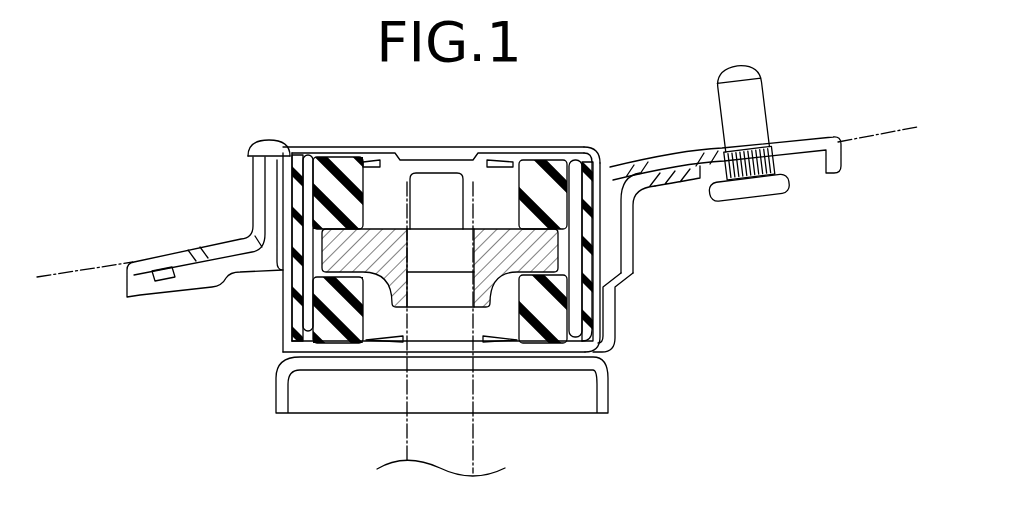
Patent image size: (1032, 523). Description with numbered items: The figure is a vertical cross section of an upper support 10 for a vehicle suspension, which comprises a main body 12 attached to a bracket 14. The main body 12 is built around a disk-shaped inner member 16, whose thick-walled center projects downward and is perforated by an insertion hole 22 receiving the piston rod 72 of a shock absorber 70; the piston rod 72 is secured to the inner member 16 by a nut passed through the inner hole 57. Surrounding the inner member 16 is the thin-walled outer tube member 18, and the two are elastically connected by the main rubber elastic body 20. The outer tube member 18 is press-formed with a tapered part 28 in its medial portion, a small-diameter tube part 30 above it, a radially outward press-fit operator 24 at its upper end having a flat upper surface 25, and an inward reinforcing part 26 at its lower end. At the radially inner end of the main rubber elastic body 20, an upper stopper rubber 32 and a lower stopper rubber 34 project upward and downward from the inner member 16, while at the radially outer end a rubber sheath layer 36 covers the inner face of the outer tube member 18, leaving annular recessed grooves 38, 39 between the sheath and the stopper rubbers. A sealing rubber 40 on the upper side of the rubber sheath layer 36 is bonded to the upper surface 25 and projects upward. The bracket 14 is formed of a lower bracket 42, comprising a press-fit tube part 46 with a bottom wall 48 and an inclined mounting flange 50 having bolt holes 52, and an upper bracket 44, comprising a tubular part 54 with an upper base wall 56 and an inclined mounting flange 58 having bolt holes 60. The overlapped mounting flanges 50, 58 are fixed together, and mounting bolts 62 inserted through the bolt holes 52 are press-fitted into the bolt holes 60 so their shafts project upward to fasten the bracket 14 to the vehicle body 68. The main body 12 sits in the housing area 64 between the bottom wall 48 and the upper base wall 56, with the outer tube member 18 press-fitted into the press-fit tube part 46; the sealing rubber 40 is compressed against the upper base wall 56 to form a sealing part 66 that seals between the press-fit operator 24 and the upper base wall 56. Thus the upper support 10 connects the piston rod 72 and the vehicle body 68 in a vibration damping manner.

The upper support for a suspension 10 is at (213, 116).
The main body 12 is at (606, 238).
The bracket 14 is at (631, 377).
The inner member 16 is at (388, 225).
The outer tube member 18 is at (279, 264).
The main rubber elastic body 20 is at (337, 146).
The insertion hole 22 is at (448, 238).
The press-fit operator 24 is at (290, 172).
The upper surface 25 is at (276, 155).
The reinforcing part 26 is at (305, 344).
The tapered part 28 is at (290, 212).
The small-diameter tube part 30 is at (290, 188).
The upper stopper rubber 32 is at (345, 165).
The lower stopper rubber 34 is at (341, 328).
The rubber sheath layer 36 is at (305, 319).
The annular recessed groove 38 is at (311, 158).
The annular recessed groove 39 is at (310, 323).
The sealing rubber 40 is at (576, 172).
The lower bracket 42 is at (620, 293).
The upper bracket 44 is at (587, 143).
The press-fit tube part 46 is at (605, 326).
The bottom wall 48 is at (568, 356).
The mounting flange 50 is at (698, 186).
The bolt holes 52 is at (766, 182).
The tubular part 54 is at (612, 165).
The upper base wall 56 is at (543, 170).
The inner hole 57 is at (497, 158).
The mounting flange 58 is at (705, 163).
The bolt holes 60 is at (762, 150).
The mounting bolts 62 is at (748, 92).
The housing area 64 is at (243, 266).
The sealing part 66 is at (607, 160).
The vehicle body 68 is at (72, 255).
The shock absorber 70 is at (404, 441).
The piston rod 72 is at (490, 446).